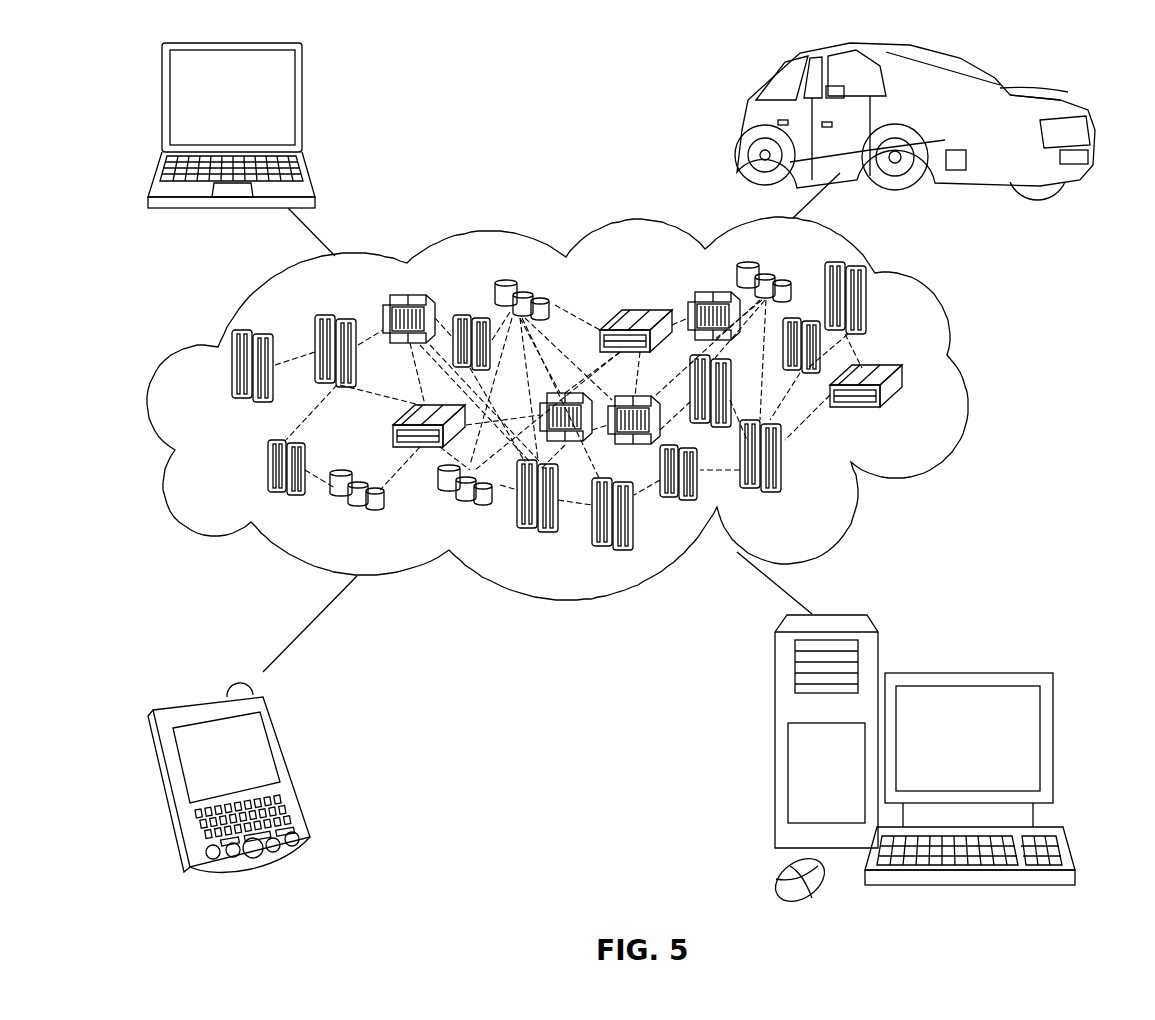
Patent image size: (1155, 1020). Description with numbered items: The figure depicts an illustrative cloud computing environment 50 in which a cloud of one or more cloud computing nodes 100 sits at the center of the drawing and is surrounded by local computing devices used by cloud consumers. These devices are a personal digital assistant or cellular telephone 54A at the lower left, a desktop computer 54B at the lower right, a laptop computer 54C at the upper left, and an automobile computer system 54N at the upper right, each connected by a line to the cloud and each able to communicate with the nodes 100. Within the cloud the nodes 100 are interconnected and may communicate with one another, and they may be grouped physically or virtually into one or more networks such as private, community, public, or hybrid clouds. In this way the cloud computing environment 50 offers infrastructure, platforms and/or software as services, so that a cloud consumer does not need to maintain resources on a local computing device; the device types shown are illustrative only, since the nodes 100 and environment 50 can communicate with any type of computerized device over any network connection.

The cloud computing environment 50 is at (963, 382).
The cloud computing nodes 100 is at (913, 416).
The personal digital assistant (PDA) or cellular telephone 54A is at (292, 768).
The desktop computer 54B is at (965, 673).
The laptop computer 54C is at (302, 105).
The automobile computer system 54N is at (748, 124).